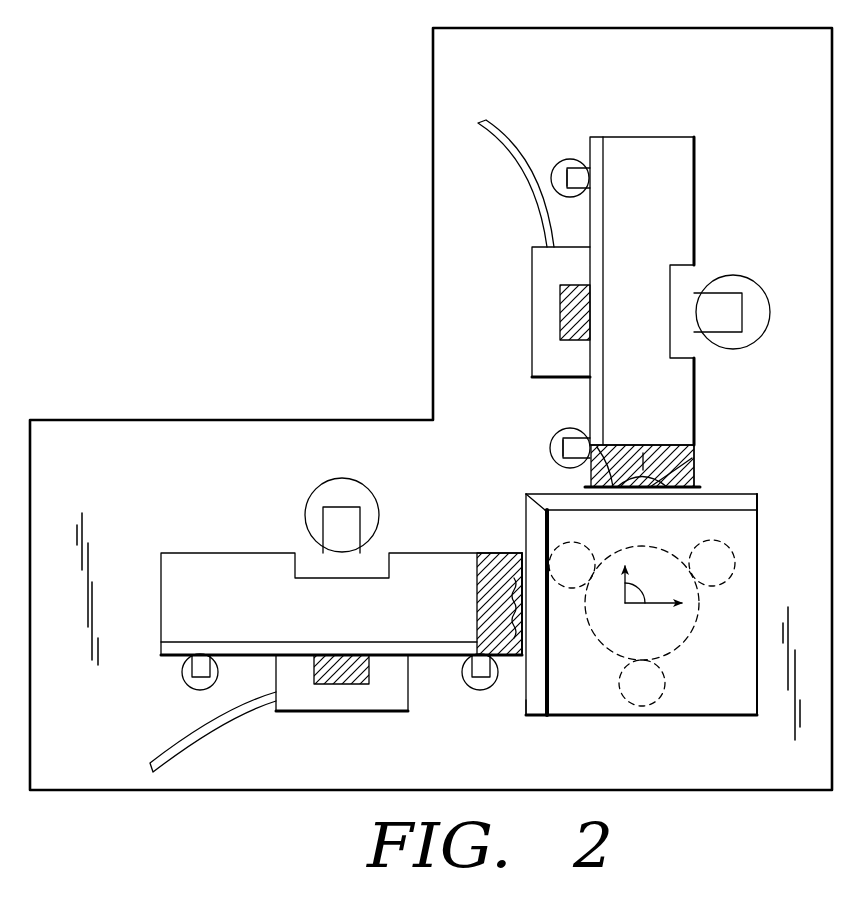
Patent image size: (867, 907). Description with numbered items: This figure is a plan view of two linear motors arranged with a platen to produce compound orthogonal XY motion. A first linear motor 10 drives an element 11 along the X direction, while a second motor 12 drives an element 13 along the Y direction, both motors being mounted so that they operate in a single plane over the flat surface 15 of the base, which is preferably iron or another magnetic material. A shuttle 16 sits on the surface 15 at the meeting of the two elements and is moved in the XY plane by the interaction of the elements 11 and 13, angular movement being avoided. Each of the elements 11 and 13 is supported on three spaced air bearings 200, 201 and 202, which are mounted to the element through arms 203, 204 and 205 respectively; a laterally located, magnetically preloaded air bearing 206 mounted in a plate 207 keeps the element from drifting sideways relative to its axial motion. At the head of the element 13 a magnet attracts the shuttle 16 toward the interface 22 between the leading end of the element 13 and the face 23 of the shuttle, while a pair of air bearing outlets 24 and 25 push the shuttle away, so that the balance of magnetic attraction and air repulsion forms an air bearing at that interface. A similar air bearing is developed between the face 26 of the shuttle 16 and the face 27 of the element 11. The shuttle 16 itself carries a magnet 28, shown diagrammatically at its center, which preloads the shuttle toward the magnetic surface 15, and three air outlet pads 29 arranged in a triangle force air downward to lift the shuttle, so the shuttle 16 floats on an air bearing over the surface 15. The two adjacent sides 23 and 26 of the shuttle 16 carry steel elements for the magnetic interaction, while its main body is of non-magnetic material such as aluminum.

The first linear motor 10 is at (200, 545).
The element 11 is at (492, 552).
The second motor 12 is at (706, 176).
The element 13 is at (590, 478).
The surface 15 is at (800, 80).
The shuttle 16 is at (590, 698).
The interface 22 is at (716, 500).
The face 23 is at (540, 508).
The air bearing outlet 24 is at (603, 447).
The air bearing outlet 25 is at (696, 463).
The face 26 is at (525, 710).
The face 27 is at (527, 575).
The magnet 28 is at (685, 635).
The air outlet pads 29 is at (577, 547).
The air bearing 200 is at (734, 276).
The air bearing 201 is at (570, 160).
The air bearing 202 is at (553, 442).
The arm 203 is at (738, 319).
The arm 204 is at (568, 178).
The arm 205 is at (565, 452).
The magnetically preloaded air bearing 206 is at (560, 335).
The plate 207 is at (532, 287).